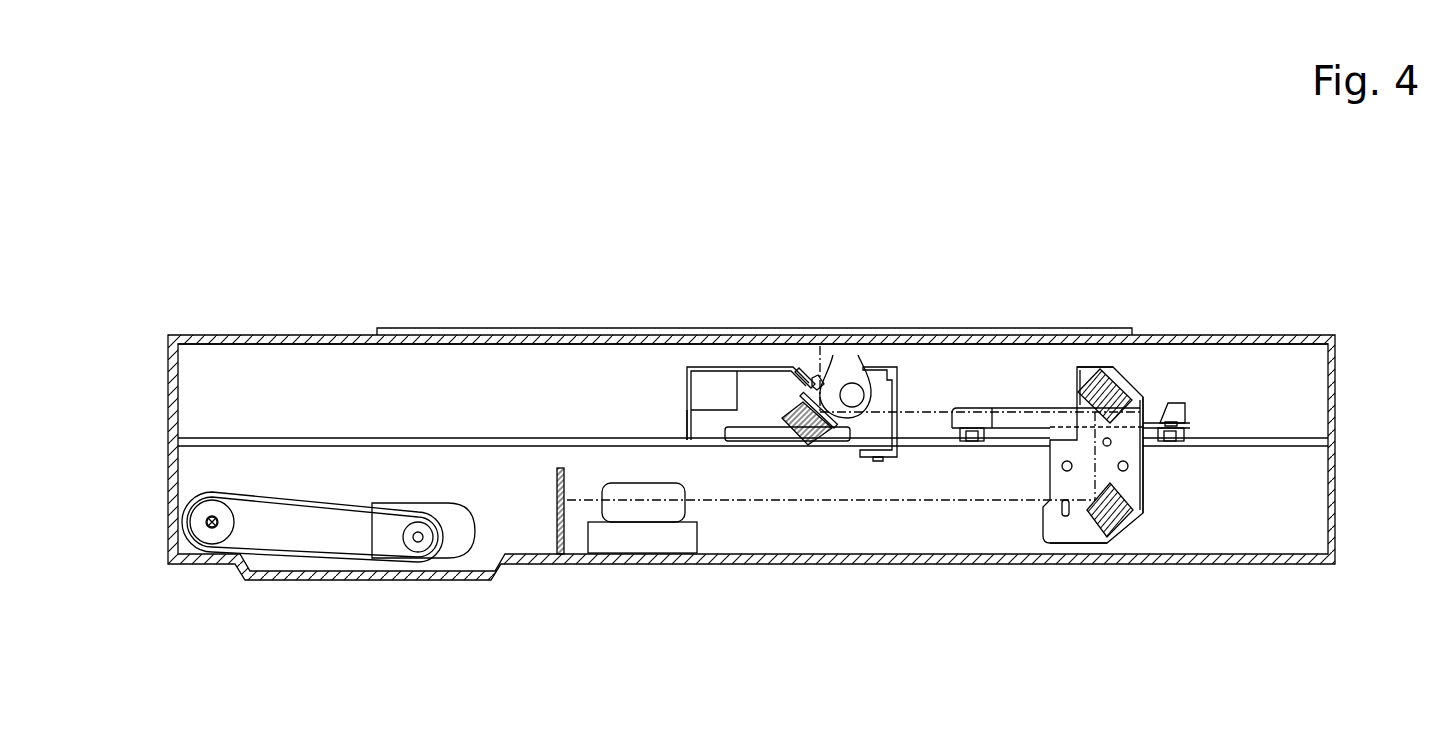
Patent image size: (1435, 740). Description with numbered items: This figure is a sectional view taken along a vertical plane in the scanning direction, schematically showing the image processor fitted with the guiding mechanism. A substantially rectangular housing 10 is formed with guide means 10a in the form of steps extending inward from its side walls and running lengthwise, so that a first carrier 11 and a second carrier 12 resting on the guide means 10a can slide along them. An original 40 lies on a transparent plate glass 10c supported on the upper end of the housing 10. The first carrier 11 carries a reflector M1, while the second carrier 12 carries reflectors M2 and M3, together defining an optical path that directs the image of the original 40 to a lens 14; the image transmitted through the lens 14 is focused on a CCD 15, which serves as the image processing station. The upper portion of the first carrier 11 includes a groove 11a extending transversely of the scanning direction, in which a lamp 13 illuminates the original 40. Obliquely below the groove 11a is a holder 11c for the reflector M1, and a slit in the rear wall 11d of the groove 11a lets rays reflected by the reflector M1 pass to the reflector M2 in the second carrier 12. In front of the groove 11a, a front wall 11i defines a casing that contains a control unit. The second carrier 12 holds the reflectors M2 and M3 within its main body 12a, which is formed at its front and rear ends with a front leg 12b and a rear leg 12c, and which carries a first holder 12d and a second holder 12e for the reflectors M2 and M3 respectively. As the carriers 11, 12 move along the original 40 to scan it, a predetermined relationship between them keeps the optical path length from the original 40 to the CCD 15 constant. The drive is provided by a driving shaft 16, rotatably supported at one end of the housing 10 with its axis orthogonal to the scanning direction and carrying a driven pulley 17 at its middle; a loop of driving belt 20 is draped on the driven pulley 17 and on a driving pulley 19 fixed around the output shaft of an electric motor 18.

The housing 10 is at (212, 333).
The guide means 10a is at (345, 438).
The transparent plate glass 10c is at (315, 335).
The original 40 is at (422, 328).
The first carrier 11 is at (752, 380).
The front wall 11i is at (686, 416).
The groove 11a is at (825, 392).
The holder 11c is at (808, 447).
The rear wall 11d is at (900, 385).
The lamp 13 is at (855, 382).
The reflector M1 is at (790, 388).
The second carrier 12 is at (1132, 450).
The main body 12a is at (1143, 500).
The front leg 12b is at (1012, 420).
The rear leg 12c is at (1178, 412).
The first holder 12d is at (1120, 372).
The second holder 12e is at (1115, 525).
The reflector M2 is at (1058, 400).
The reflector M3 is at (1080, 520).
The lens 14 is at (672, 510).
The CCD 15 is at (568, 525).
The driving shaft 16 is at (212, 522).
The driven pulley 17 is at (228, 527).
The electric motor 18 is at (447, 508).
The driving pulley 19 is at (418, 548).
The driving belt 20 is at (325, 500).